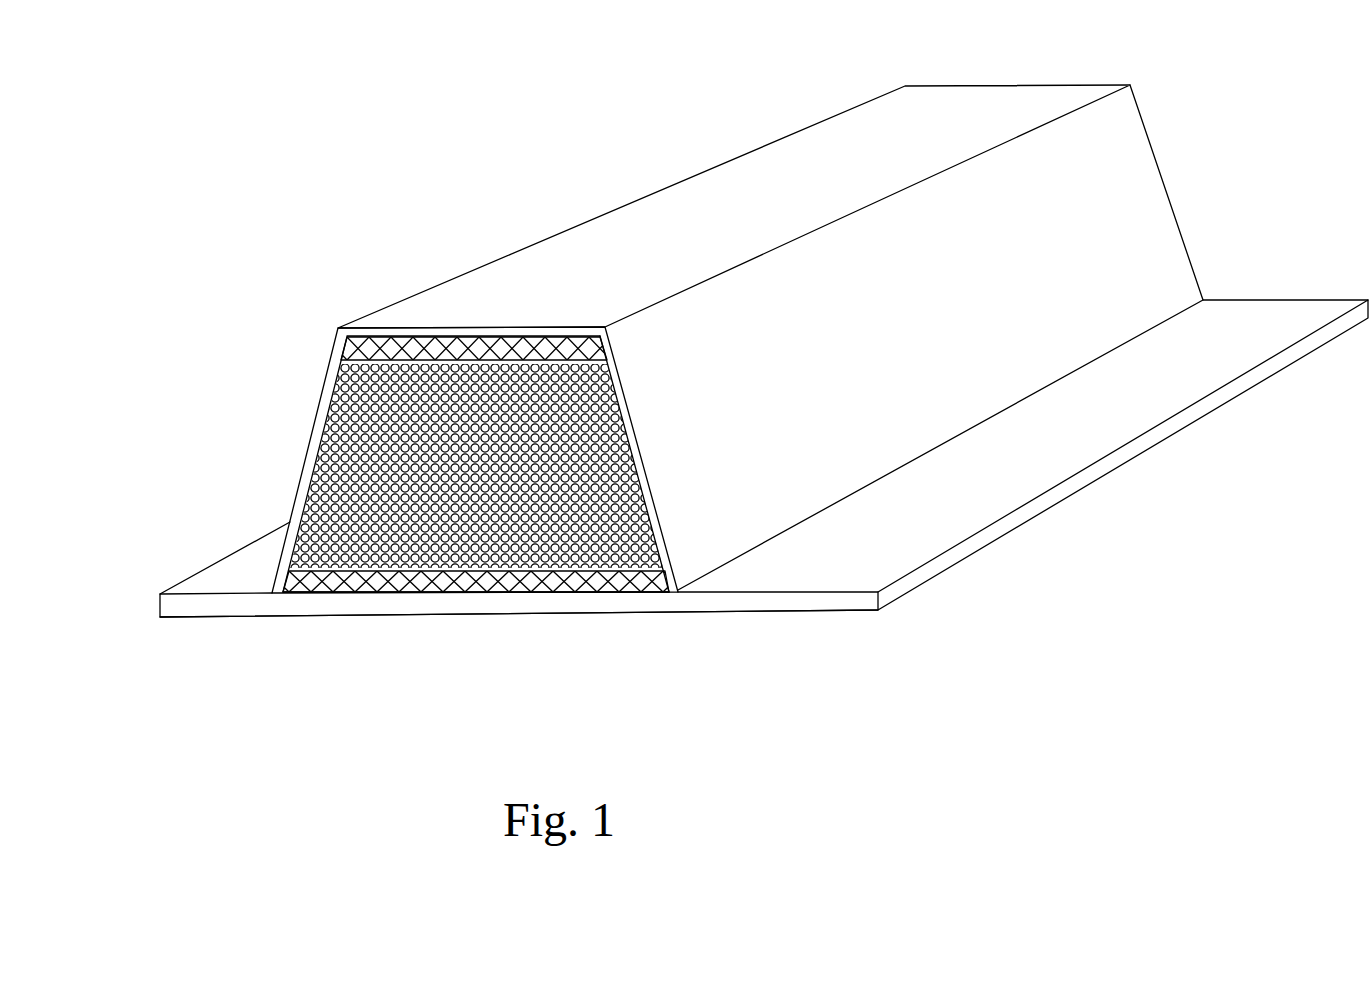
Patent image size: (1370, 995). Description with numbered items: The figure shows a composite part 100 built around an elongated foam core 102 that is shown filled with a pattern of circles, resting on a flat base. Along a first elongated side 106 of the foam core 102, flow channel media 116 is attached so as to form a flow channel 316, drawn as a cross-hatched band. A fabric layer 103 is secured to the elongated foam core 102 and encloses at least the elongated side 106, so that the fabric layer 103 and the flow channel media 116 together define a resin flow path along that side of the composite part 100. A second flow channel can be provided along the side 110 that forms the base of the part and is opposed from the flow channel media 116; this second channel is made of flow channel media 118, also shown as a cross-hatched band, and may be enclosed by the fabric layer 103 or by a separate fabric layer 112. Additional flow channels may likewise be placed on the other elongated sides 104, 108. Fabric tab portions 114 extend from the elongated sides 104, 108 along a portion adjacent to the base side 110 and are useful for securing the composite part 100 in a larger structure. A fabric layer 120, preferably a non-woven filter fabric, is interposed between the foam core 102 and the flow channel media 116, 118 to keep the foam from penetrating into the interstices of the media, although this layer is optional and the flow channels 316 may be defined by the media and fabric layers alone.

The composite part 100 is at (340, 238).
The elongated foam core 102 is at (340, 463).
The fabric layer 103 is at (298, 504).
The elongated side 104 is at (326, 378).
The first elongated side 106 is at (597, 269).
The elongated side 108 is at (756, 433).
The base side 110 is at (515, 618).
The separate fabric layer 112 is at (427, 600).
The fabric tab portions 114 is at (268, 566).
The flow channel media 116 is at (357, 337).
The flow channel media 118 is at (303, 595).
The fabric layer 120 is at (651, 513).
The flow channel 316 is at (455, 334).